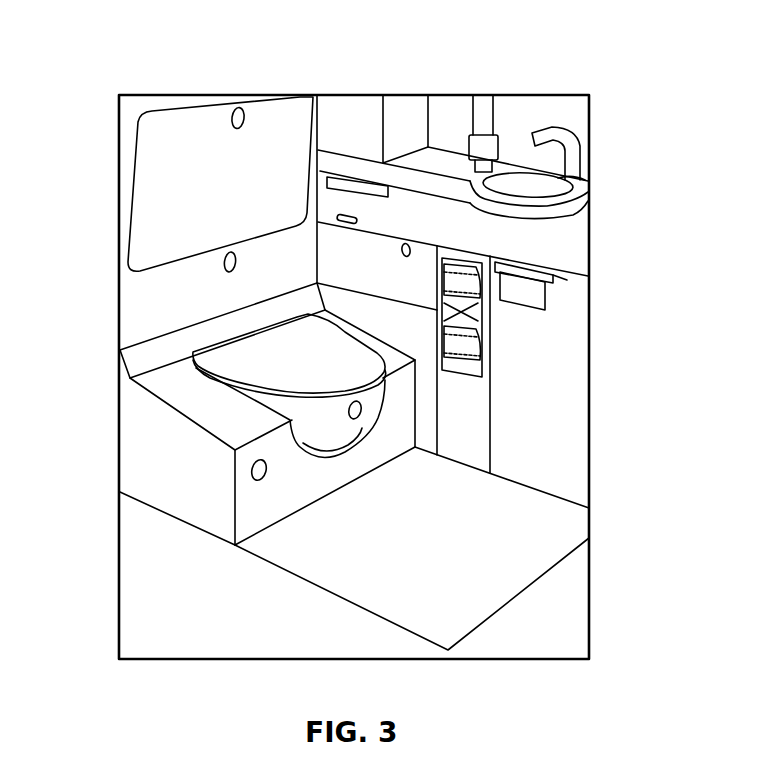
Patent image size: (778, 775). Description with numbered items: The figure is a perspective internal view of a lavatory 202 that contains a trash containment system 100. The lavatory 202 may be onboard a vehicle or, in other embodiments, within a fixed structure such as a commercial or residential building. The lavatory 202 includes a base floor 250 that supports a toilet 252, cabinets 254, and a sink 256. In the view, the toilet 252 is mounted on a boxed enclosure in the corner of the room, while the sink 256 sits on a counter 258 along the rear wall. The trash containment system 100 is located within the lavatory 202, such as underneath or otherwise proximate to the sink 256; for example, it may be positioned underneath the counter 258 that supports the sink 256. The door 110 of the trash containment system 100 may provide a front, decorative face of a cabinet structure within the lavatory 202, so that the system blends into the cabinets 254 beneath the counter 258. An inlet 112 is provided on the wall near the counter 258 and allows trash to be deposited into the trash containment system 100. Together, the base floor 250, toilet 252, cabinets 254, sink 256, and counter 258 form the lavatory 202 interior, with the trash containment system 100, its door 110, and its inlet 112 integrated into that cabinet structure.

The lavatory 202 is at (171, 88).
The toilet 252 is at (260, 355).
The sink 256 is at (528, 183).
The counter 258 is at (581, 212).
The trash containment system 100 is at (553, 281).
The cabinets 254 is at (583, 359).
The door 110 is at (533, 420).
The inlet 112 is at (508, 295).
The base floor 250 is at (523, 562).